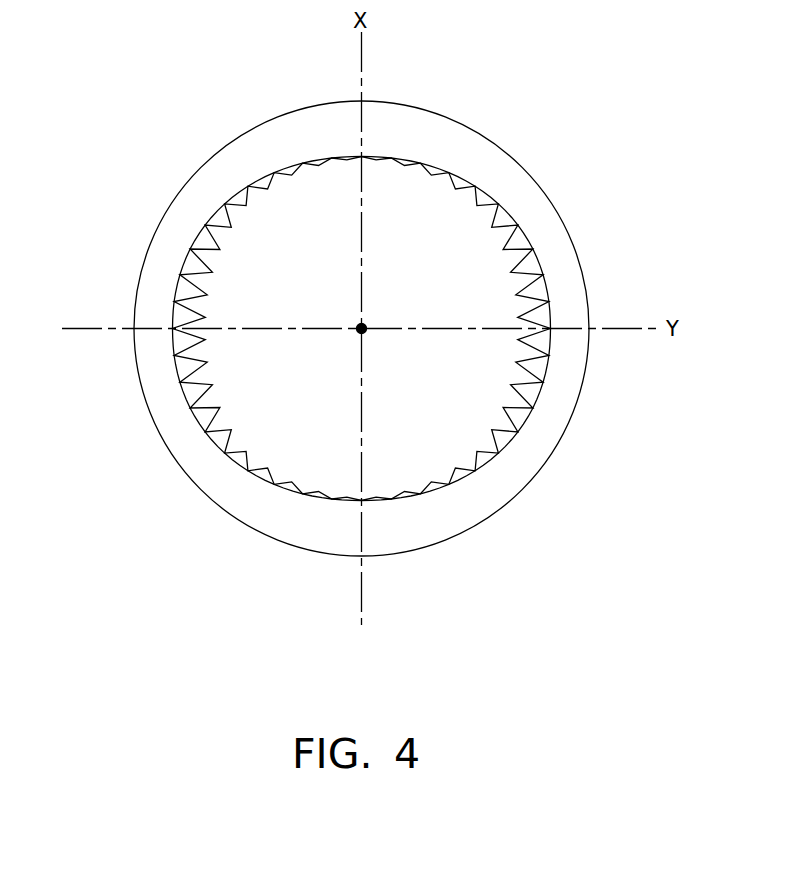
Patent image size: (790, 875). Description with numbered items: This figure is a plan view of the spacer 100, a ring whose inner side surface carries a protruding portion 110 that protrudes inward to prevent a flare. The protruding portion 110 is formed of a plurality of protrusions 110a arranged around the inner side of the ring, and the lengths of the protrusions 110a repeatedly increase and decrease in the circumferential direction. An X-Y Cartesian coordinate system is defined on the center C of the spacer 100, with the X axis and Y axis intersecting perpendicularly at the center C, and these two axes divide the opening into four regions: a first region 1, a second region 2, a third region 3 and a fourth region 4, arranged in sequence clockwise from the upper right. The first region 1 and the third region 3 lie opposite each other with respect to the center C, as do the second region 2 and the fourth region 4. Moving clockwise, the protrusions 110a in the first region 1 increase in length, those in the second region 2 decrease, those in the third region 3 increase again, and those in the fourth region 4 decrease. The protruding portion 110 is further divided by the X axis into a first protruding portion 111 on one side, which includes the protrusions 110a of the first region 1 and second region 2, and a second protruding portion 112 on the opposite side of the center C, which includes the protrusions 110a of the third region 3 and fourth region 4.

The first region 1 is at (418, 267).
The second region 2 is at (423, 395).
The third region 3 is at (287, 380).
The fourth region 4 is at (292, 268).
The center C is at (362, 328).
The spacer 100 is at (166, 242).
The protruding portion 110 is at (590, 620).
The protrusions 110a is at (521, 293).
The first protruding portion 111 is at (540, 313).
The second protruding portion 112 is at (184, 292).